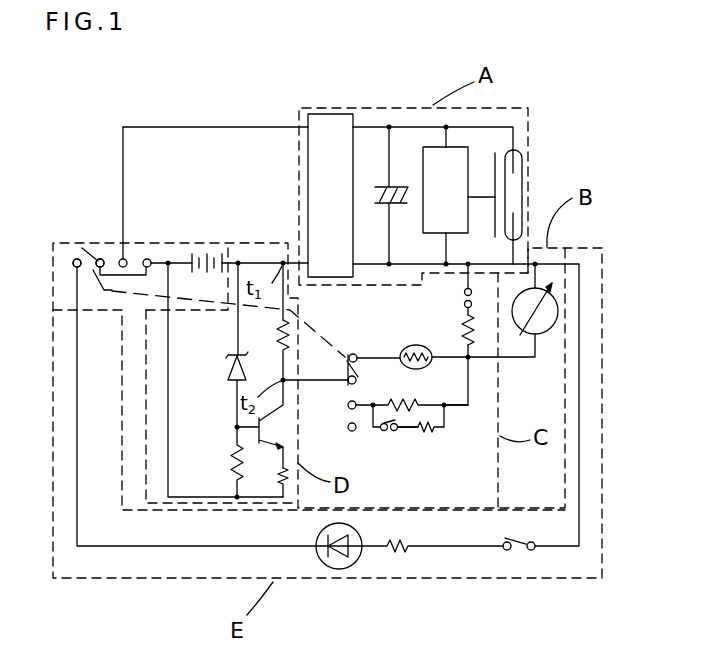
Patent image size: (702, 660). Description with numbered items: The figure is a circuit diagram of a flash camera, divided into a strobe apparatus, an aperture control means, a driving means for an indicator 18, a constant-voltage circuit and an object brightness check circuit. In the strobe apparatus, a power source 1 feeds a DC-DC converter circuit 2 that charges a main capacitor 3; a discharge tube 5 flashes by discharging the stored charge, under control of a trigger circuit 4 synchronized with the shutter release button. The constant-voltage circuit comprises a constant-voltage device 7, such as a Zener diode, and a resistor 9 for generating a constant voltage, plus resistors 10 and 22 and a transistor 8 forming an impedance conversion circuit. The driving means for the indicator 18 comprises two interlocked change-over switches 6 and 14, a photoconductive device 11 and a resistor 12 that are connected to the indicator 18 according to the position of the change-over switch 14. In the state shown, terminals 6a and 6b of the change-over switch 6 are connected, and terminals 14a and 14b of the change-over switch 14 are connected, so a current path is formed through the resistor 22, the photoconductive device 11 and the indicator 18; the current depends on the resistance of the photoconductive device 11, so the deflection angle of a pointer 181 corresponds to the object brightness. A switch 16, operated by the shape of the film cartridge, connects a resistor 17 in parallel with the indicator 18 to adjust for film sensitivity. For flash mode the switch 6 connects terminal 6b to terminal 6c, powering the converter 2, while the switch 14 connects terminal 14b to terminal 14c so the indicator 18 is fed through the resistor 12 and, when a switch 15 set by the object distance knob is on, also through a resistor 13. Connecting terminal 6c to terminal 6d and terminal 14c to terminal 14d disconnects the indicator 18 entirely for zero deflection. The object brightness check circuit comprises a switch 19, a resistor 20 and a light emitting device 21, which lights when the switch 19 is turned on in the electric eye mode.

The power source 1 is at (207, 248).
The DC-DC converter circuit 2 is at (317, 152).
The main capacitor 3 is at (385, 205).
The trigger circuit 4 is at (432, 228).
The discharge tube 5 is at (516, 177).
The change-over switch 6 is at (91, 256).
The terminal 6a is at (74, 270).
The terminal 6b is at (96, 270).
The terminal 6c is at (123, 258).
The terminal 6d is at (148, 258).
The constant-voltage device 7 is at (232, 370).
The transistor 8 is at (272, 435).
The resistor 9 is at (233, 455).
The resistor 10 is at (284, 490).
The photoconductive device 11 is at (410, 347).
The resistor 12 is at (412, 400).
The resistor 13 is at (423, 433).
The change-over switch 14 is at (345, 366).
The terminal 14a is at (358, 352).
The terminal 14b is at (357, 376).
The terminal 14c is at (348, 405).
The terminal 14d is at (348, 428).
The switch 15 is at (388, 432).
The switch 16 is at (473, 287).
The resistor 17 is at (471, 330).
The indicator 18 is at (545, 326).
The pointer 181 is at (553, 291).
The switch 19 is at (517, 550).
The resistor 20 is at (407, 553).
The light emitting device 21 is at (314, 553).
The resistor 22 is at (281, 322).